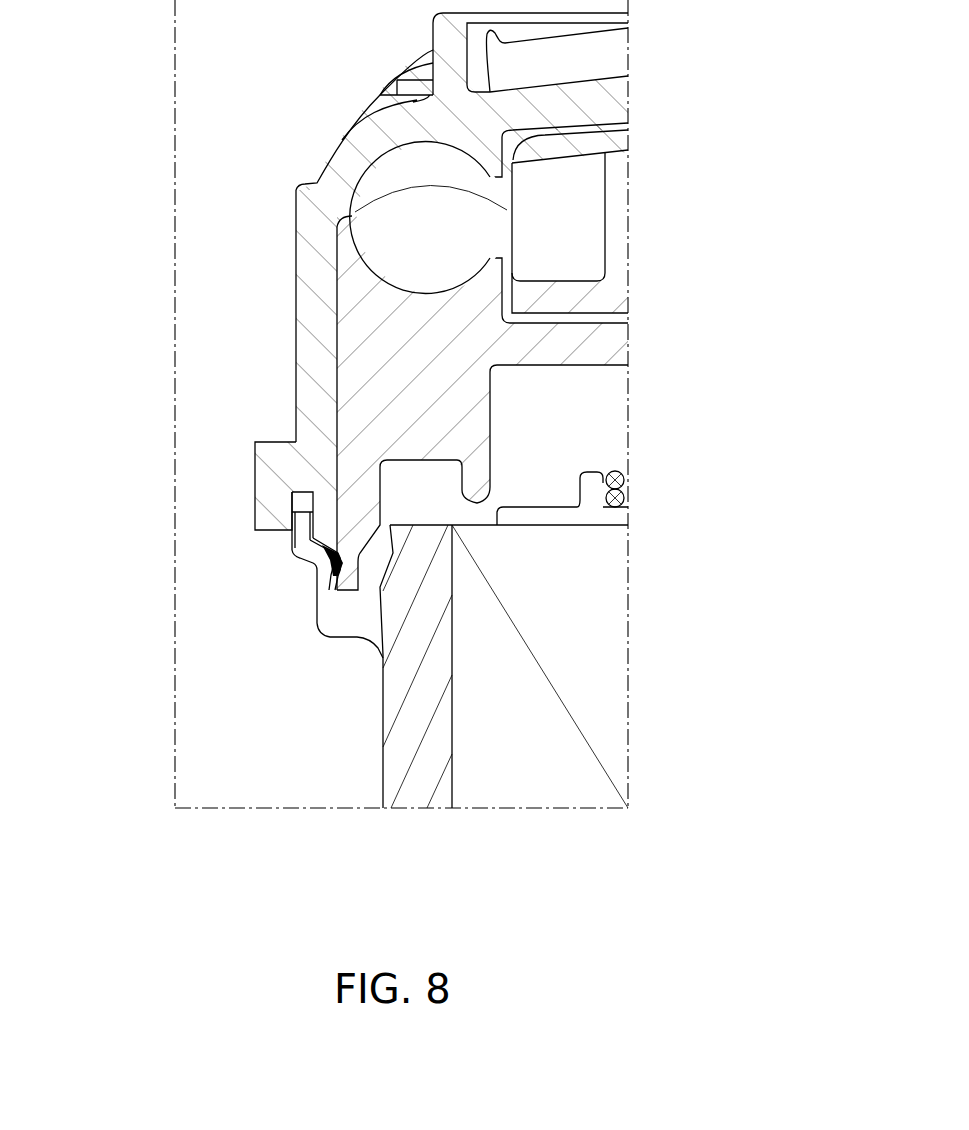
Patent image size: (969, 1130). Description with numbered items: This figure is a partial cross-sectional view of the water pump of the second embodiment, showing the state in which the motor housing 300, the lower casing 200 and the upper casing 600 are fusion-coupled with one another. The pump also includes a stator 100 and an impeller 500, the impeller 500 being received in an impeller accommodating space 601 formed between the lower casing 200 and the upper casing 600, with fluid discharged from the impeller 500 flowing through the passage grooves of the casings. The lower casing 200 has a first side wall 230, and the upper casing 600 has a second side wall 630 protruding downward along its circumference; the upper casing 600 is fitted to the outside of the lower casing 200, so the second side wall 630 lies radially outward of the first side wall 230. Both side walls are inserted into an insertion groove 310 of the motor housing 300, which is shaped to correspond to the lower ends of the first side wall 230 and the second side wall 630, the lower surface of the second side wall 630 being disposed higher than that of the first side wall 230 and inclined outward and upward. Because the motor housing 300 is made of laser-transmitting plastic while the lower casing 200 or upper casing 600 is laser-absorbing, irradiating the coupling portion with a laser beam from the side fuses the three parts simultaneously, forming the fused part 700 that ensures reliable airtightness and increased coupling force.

The stator 100 is at (538, 763).
The lower casing 200 is at (433, 342).
The first side wall 230 is at (356, 426).
The motor housing 300 is at (383, 768).
The insertion groove 310 is at (343, 577).
The impeller 500 is at (603, 292).
The upper casing 600 is at (335, 143).
The impeller accommodating space 601 is at (355, 212).
The second side wall 630 is at (318, 464).
The fused part 700 is at (330, 553).